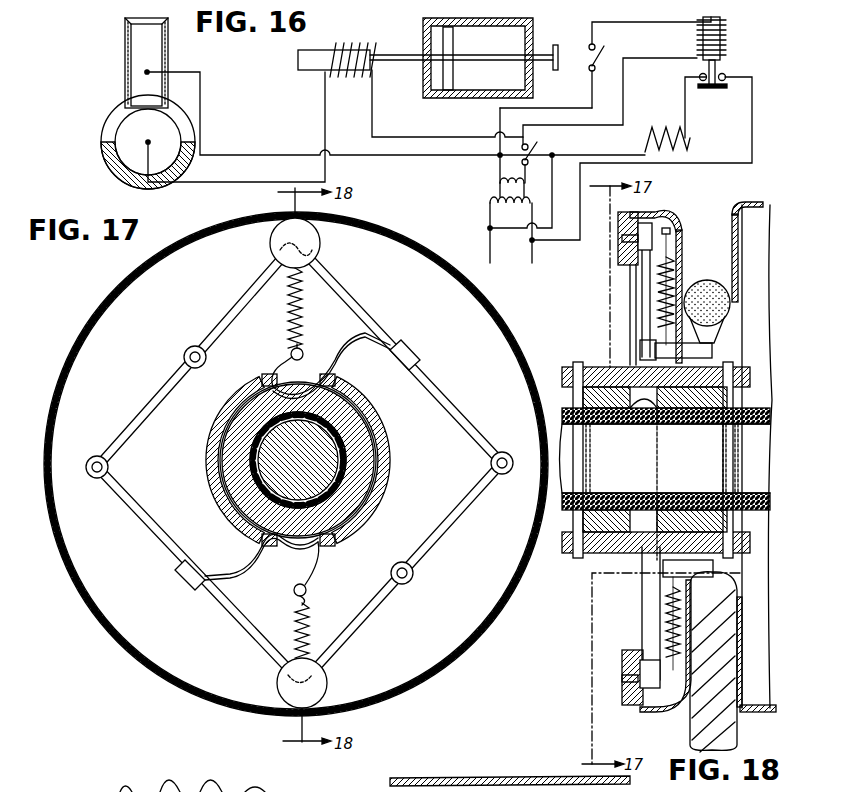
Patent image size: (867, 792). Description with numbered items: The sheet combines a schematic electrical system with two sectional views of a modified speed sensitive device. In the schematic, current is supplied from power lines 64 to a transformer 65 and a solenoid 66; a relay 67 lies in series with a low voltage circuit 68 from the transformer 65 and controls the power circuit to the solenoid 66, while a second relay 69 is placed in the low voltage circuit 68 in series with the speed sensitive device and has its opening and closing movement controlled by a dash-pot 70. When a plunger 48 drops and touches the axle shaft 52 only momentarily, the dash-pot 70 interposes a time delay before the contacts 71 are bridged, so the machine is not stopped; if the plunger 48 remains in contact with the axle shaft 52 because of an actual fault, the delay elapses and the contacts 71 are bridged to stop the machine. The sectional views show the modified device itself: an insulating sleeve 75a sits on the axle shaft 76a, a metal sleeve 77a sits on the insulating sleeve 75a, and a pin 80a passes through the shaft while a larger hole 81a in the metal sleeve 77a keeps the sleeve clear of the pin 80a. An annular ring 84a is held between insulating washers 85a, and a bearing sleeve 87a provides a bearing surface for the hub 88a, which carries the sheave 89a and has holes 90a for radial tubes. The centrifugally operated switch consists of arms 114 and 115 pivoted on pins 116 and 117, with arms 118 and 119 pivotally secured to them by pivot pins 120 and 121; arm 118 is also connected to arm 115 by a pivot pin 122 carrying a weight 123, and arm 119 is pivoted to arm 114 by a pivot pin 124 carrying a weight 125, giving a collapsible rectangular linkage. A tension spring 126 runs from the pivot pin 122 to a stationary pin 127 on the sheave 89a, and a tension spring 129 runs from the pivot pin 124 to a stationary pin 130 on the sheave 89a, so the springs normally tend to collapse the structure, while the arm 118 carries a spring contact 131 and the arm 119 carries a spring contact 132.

In FIG. 16, the plunger 48 is at (133, 52).
In FIG. 16, the axle shaft 52 is at (131, 152).
In FIG. 16, the power lines 64 is at (532, 262).
In FIG. 16, the transformer 65 is at (496, 187).
In FIG. 16, the solenoid 66 is at (688, 140).
In FIG. 16, the relay 67 is at (718, 41).
In FIG. 16, the low voltage circuit 68 is at (588, 100).
In FIG. 16, the relay 69 is at (541, 148).
In FIG. 16, the dash-pot 70 is at (531, 30).
In FIG. 16, the contacts 71 is at (606, 76).
In FIG. 17, the insulating sleeve 75a is at (345, 468).
In FIG. 18, the insulating sleeve 75a is at (626, 428).
In FIG. 17, the axle shaft 76a is at (242, 440).
In FIG. 18, the axle shaft 76a is at (645, 458).
In FIG. 17, the metal sleeve 77a is at (345, 455).
In FIG. 18, the metal sleeve 77a is at (630, 494).
In FIG. 18, the pin 80a is at (718, 458).
In FIG. 18, the hole 81a is at (752, 458).
In FIG. 17, the annular ring 84a is at (240, 464).
In FIG. 18, the annular ring 84a is at (686, 494).
In FIG. 18, the insulating washers 85a is at (672, 484).
In FIG. 18, the bearing sleeve 87a is at (772, 392).
In FIG. 17, the hub 88a is at (356, 420).
In FIG. 18, the hub 88a is at (606, 372).
In FIG. 18, the sheave 89a is at (686, 224).
In FIG. 17, the holes 90a is at (262, 381).
In FIG. 17, the arm 114 is at (228, 330).
In FIG. 17, the arm 115 is at (432, 530).
In FIG. 17, the pin 116 is at (188, 350).
In FIG. 17, the pin 117 is at (413, 578).
In FIG. 17, the arm 118 is at (172, 525).
In FIG. 17, the arm 119 is at (440, 392).
In FIG. 17, the pivot pin 120 is at (96, 480).
In FIG. 17, the pivot pin 121 is at (507, 455).
In FIG. 18, the pivot pin 122 is at (661, 694).
In FIG. 17, the weight 123 is at (325, 685).
In FIG. 18, the weight 123 is at (626, 703).
In FIG. 18, the pivot pin 124 is at (663, 222).
In FIG. 17, the weight 125 is at (316, 244).
In FIG. 18, the weight 125 is at (655, 222).
In FIG. 17, the tension spring 126 is at (309, 618).
In FIG. 17, the stationary pin 127 is at (296, 595).
In FIG. 18, the stationary pin 127 is at (715, 568).
In FIG. 17, the tension spring 129 is at (284, 328).
In FIG. 17, the stationary pin 130 is at (290, 355).
In FIG. 18, the stationary pin 130 is at (688, 348).
In FIG. 17, the spring contact 131 is at (255, 586).
In FIG. 17, the spring contact 132 is at (331, 366).